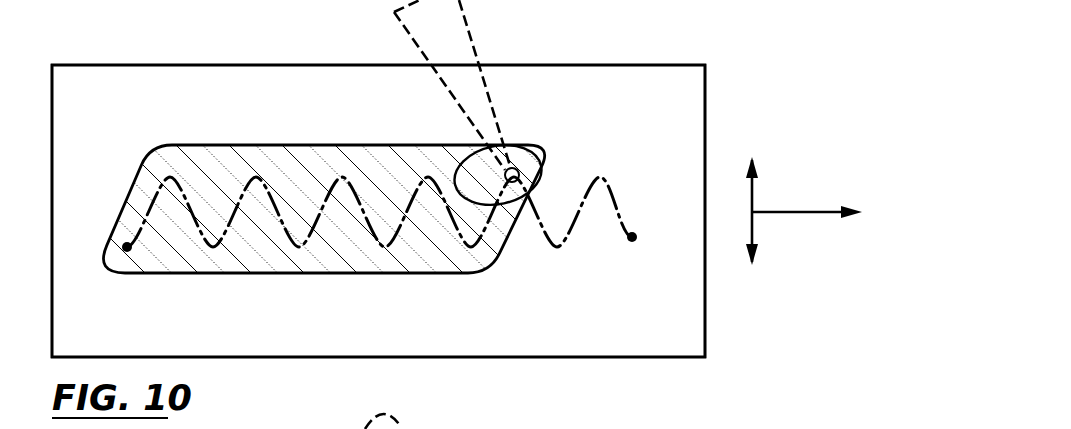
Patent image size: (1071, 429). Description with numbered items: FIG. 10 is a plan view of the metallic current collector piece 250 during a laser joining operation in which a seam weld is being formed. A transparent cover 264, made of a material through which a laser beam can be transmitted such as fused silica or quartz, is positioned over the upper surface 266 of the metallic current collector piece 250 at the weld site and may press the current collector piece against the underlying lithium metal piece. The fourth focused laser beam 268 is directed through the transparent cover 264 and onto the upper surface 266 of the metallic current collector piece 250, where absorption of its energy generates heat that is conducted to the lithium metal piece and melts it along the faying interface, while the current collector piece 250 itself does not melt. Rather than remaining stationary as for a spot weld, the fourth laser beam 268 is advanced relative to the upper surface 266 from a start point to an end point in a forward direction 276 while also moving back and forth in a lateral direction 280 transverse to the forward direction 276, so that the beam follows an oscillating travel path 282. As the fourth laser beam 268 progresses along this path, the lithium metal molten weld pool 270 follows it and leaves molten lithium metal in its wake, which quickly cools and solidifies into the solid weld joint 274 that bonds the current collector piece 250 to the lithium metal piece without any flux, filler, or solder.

The metallic current collector piece 250 is at (705, 92).
The transparent cover 264 is at (435, 211).
The upper surface 266 is at (168, 124).
The fourth focused laser beam 268 is at (467, 32).
The lithium metal molten weld pool 270 is at (532, 152).
The solid weld joint 274 is at (335, 274).
The forward direction 276 is at (813, 213).
The lateral direction 280 is at (752, 193).
The oscillating travel path 282 is at (251, 175).